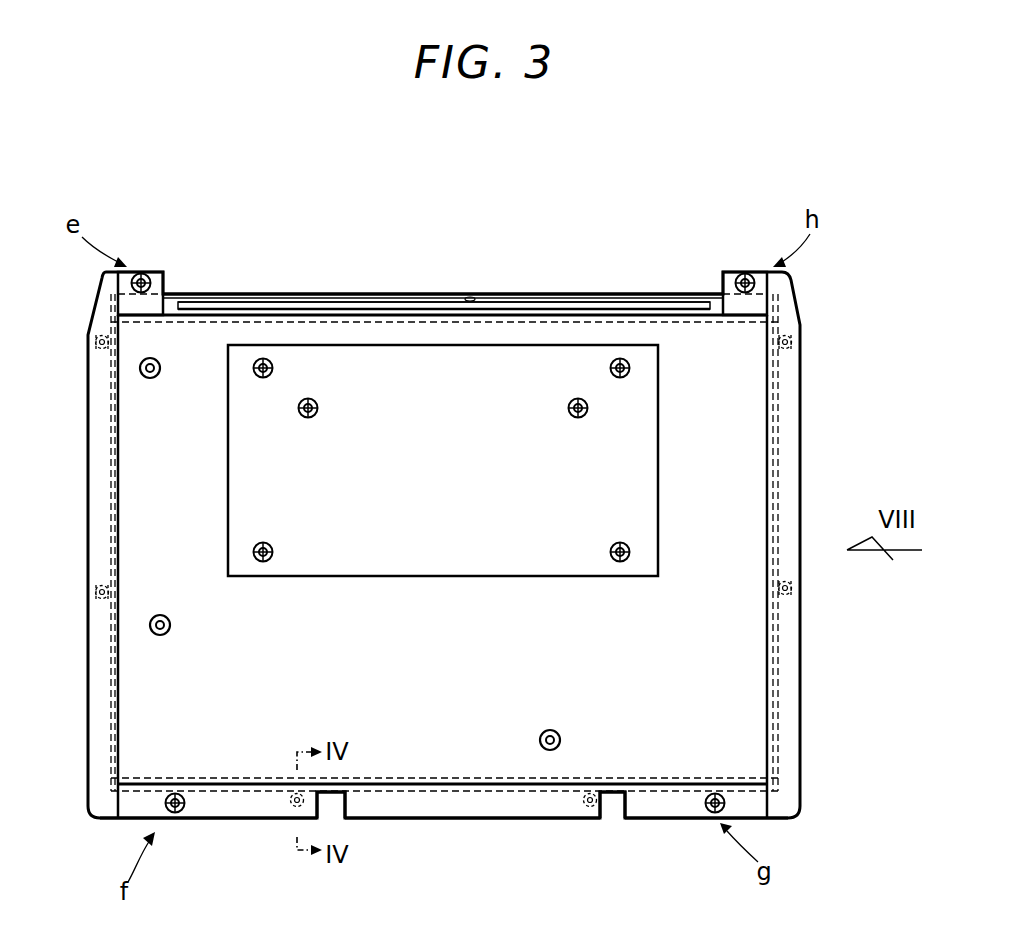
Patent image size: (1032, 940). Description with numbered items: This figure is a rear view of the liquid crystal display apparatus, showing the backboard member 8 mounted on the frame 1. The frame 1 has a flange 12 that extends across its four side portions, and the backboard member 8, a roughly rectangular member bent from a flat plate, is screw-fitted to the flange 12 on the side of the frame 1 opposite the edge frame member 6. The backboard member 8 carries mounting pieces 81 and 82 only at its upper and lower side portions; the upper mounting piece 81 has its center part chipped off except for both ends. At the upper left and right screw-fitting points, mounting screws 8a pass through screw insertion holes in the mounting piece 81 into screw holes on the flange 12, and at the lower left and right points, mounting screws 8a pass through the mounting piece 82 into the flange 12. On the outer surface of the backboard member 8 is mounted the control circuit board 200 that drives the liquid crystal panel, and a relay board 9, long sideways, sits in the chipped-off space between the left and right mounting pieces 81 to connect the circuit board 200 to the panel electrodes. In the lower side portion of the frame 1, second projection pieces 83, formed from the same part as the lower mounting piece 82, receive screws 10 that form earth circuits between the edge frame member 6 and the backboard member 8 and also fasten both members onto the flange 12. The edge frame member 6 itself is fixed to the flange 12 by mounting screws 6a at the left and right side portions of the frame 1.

The frame 1 is at (815, 423).
The edge frame member 6 is at (281, 284).
The mounting screws 6a is at (96, 345).
The backboard member 8 is at (111, 706).
The mounting screws 8a is at (141, 275).
The relay board 9 is at (541, 304).
The screws 10 is at (292, 787).
The flange 12 is at (792, 475).
The mounting piece 81 is at (157, 281).
The mounting piece 82 is at (228, 818).
The second projection pieces 83 is at (286, 818).
The control circuit board 200 is at (470, 577).